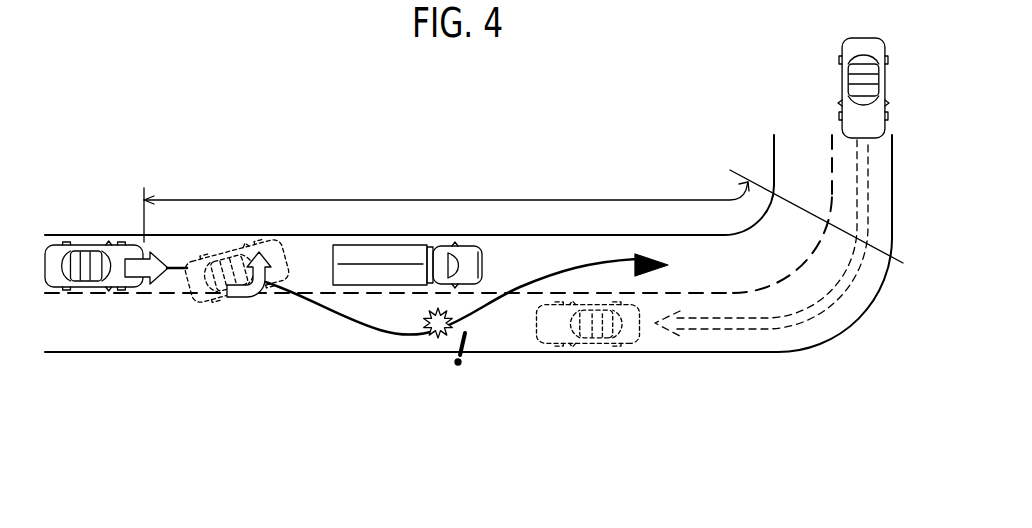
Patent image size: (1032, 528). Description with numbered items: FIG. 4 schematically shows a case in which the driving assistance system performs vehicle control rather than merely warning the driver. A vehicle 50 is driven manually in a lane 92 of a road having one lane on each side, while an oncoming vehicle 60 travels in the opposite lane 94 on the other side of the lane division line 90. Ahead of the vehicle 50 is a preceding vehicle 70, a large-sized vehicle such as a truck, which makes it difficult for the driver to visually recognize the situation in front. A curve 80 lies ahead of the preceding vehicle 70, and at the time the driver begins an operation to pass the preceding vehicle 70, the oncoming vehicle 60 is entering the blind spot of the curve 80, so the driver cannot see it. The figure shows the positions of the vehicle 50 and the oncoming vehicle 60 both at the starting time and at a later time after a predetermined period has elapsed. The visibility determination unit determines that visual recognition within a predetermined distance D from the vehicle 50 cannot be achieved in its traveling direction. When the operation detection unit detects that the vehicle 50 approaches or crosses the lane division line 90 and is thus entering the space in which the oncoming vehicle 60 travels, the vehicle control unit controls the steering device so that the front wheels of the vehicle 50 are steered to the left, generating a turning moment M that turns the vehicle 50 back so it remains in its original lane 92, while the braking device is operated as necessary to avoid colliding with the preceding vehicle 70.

The vehicle 50 is at (262, 240).
The oncoming vehicle 60 is at (840, 80).
The preceding vehicle 70 is at (368, 242).
The curve 80 is at (474, 287).
The lane division line 90 is at (797, 272).
The lane 92 is at (301, 254).
The opposite lane 94 is at (312, 338).
The turning moment M is at (237, 302).
The predetermined distance D is at (446, 207).